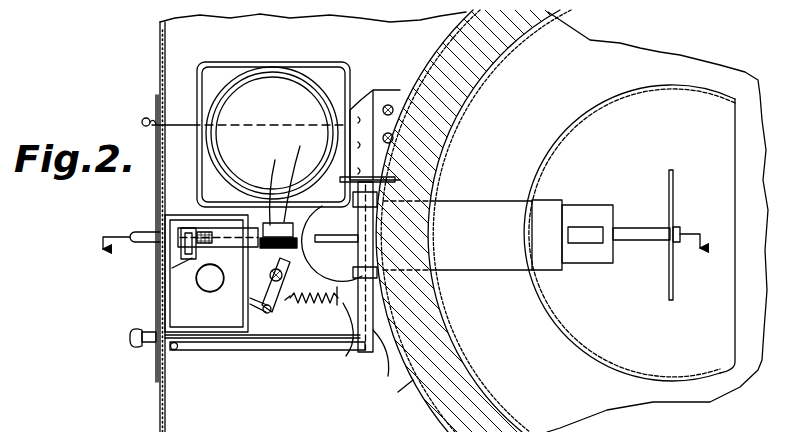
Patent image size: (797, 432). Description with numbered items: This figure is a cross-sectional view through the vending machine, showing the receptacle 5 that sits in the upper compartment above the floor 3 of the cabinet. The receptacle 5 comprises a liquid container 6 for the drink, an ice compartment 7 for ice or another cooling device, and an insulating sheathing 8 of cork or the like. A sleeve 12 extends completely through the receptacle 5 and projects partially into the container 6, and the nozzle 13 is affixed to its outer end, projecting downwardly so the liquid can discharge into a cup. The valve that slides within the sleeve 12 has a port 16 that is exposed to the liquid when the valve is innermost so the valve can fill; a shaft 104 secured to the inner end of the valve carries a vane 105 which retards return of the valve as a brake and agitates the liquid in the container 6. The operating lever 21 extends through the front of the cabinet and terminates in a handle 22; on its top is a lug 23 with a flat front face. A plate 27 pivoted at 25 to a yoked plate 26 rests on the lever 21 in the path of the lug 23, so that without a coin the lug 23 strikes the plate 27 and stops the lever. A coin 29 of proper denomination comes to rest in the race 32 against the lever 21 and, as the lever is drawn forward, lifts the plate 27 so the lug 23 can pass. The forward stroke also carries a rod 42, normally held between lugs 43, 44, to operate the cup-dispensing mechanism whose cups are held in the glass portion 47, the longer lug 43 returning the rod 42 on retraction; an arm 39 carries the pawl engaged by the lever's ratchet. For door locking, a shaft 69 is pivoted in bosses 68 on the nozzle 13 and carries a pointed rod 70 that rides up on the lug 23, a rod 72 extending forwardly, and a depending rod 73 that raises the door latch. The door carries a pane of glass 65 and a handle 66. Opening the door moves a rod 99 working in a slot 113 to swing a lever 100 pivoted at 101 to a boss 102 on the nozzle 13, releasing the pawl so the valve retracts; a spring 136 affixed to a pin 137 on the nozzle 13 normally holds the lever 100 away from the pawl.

The receptacle 5 is at (420, 388).
The liquid container 6 is at (585, 347).
The ice compartment 7 is at (478, 383).
The insulating sheathing 8 is at (438, 357).
The sleeve 12 is at (548, 212).
The nozzle 13 is at (603, 210).
The port 16 is at (592, 240).
The shaft 104 is at (637, 233).
The vane 105 is at (674, 196).
The floor 3 is at (399, 259).
The pane of glass 65 is at (157, 355).
The handle 66 is at (145, 338).
The glass portion 47 is at (287, 105).
The lug 44 is at (303, 226).
The lug 43 is at (299, 174).
The arm 39 is at (276, 183).
The rod 42 is at (288, 228).
The rod 70 is at (340, 238).
The bosses 68 is at (357, 270).
The lug 23 is at (312, 240).
The handle 22 is at (142, 236).
The yoked plate 26 is at (178, 250).
The pivot 25 is at (172, 268).
The operating lever 21 is at (246, 275).
The plate 27 is at (222, 265).
The coin 29 is at (210, 282).
The race 32 is at (218, 336).
The rod 72 is at (196, 350).
The rod 73 is at (175, 350).
The rod 99 is at (276, 313).
The slot 113 is at (258, 318).
The boss 102 is at (286, 265).
The spring 136 is at (326, 302).
The pivot 101 is at (305, 309).
The lever 100 is at (333, 339).
The pin 137 is at (364, 362).
The shaft 69 is at (393, 391).